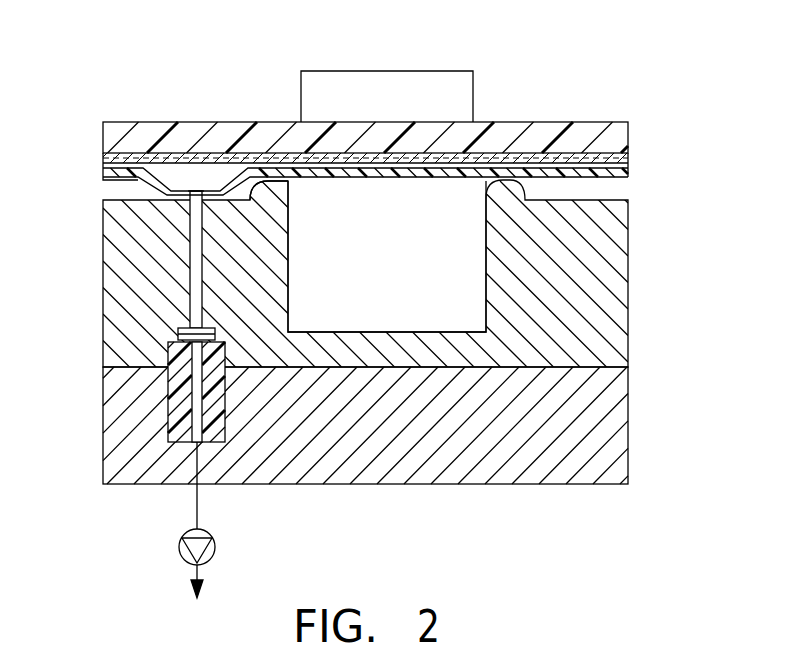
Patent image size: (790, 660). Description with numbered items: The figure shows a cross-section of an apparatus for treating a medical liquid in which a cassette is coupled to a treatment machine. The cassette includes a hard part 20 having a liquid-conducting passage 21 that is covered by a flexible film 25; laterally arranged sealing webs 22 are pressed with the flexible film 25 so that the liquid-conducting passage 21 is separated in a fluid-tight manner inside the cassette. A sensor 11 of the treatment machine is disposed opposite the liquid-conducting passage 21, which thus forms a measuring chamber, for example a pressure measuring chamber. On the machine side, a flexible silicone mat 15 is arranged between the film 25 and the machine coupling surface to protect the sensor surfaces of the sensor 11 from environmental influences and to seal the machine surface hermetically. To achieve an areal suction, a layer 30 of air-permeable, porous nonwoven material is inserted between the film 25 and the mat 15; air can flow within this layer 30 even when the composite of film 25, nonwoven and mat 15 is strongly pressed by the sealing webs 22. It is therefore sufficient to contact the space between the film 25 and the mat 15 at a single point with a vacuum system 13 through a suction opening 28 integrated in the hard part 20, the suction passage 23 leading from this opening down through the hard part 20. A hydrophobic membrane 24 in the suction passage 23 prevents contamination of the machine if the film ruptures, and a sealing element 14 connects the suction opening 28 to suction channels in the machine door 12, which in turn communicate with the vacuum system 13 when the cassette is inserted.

The sensor 11 is at (415, 85).
The machine door 12 is at (416, 485).
The vacuum system 13 is at (182, 556).
The sealing element 14 is at (172, 397).
The silicone mat 15 is at (615, 137).
The hard part 20 is at (105, 283).
The liquid-conducting passage 21 is at (402, 297).
The sealing webs 22 is at (276, 191).
The stem 23 is at (182, 198).
The hydrophobic membrane 24 is at (178, 333).
The flexible film 25 is at (104, 173).
The suction opening 28 is at (200, 190).
The layer of air-permeable material 30 is at (104, 162).